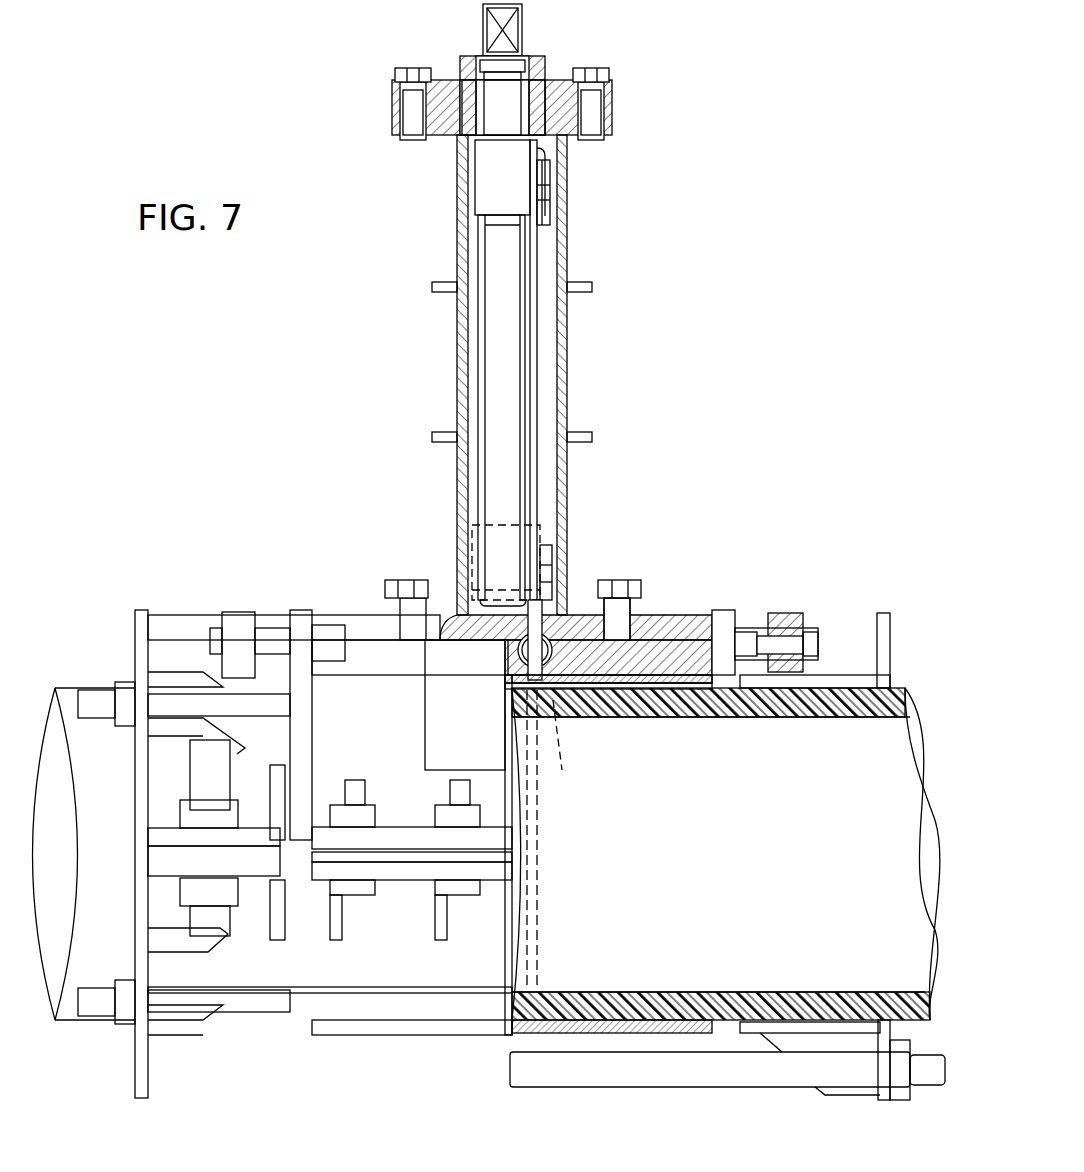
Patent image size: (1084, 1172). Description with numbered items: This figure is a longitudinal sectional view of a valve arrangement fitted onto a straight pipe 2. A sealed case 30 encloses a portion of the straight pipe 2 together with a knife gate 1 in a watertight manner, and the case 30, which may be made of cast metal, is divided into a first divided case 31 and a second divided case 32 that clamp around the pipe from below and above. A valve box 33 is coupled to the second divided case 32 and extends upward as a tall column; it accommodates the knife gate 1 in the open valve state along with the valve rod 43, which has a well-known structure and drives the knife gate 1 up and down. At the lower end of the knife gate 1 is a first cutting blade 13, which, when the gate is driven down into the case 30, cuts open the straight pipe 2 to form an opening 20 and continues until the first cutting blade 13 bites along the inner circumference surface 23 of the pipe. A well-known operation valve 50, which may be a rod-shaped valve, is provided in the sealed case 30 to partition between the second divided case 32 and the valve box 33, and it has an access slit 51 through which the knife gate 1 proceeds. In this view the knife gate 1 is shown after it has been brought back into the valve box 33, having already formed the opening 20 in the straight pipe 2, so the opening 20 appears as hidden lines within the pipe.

The knife gate 1 is at (540, 355).
The straight pipe 2 is at (758, 720).
The first cutting blade 13 is at (543, 583).
The opening 20 is at (562, 770).
The inner circumference surface 23 is at (690, 993).
The sealed case 30 is at (700, 598).
The first divided case 31 is at (395, 975).
The second divided case 32 is at (370, 682).
The valve box 33 is at (568, 240).
The valve rod 43 is at (476, 385).
The operation valve 50 is at (590, 698).
The access slit 51 is at (578, 615).